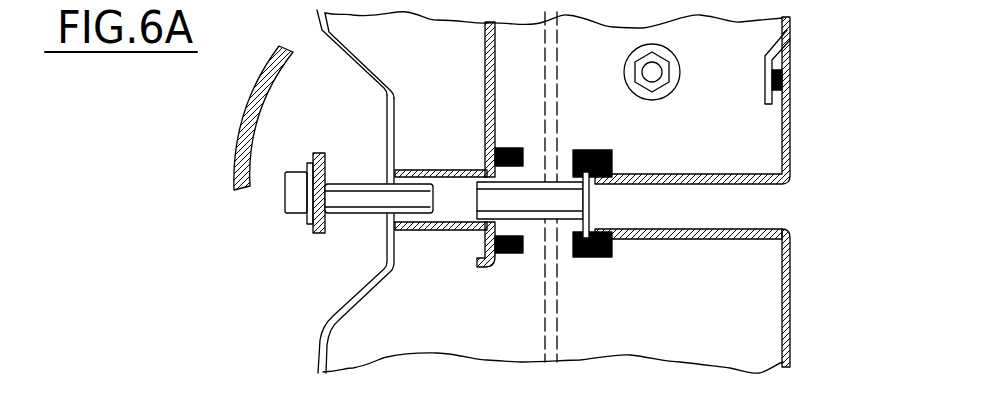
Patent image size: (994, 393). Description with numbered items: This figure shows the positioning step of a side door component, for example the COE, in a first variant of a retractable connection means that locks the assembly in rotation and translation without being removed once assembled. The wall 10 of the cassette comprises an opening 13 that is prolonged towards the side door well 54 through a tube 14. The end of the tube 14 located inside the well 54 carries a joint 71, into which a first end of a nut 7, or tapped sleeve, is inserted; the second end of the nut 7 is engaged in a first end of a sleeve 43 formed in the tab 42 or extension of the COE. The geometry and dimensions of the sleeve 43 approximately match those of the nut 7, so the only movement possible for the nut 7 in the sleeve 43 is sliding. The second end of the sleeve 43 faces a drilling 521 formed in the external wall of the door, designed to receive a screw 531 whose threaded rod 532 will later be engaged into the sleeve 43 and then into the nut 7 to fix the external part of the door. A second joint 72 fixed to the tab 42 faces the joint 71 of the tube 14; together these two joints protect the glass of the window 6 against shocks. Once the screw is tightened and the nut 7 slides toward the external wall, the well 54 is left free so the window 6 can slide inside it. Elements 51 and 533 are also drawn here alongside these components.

The window 6 is at (552, 340).
The nut 7 is at (682, 75).
The wall of the cassette 10 is at (790, 143).
The opening 13 is at (763, 207).
The tube 14 is at (707, 239).
The tab 42 is at (487, 82).
The sleeve 43 is at (440, 231).
The clip 51 is at (790, 40).
The well 54 is at (485, 342).
The joint 71 is at (583, 150).
The second joint 72 is at (513, 148).
The drilling 521 is at (383, 177).
The screw 531 is at (292, 210).
The threaded rod 532 is at (358, 212).
The arcuate member 533 is at (255, 97).